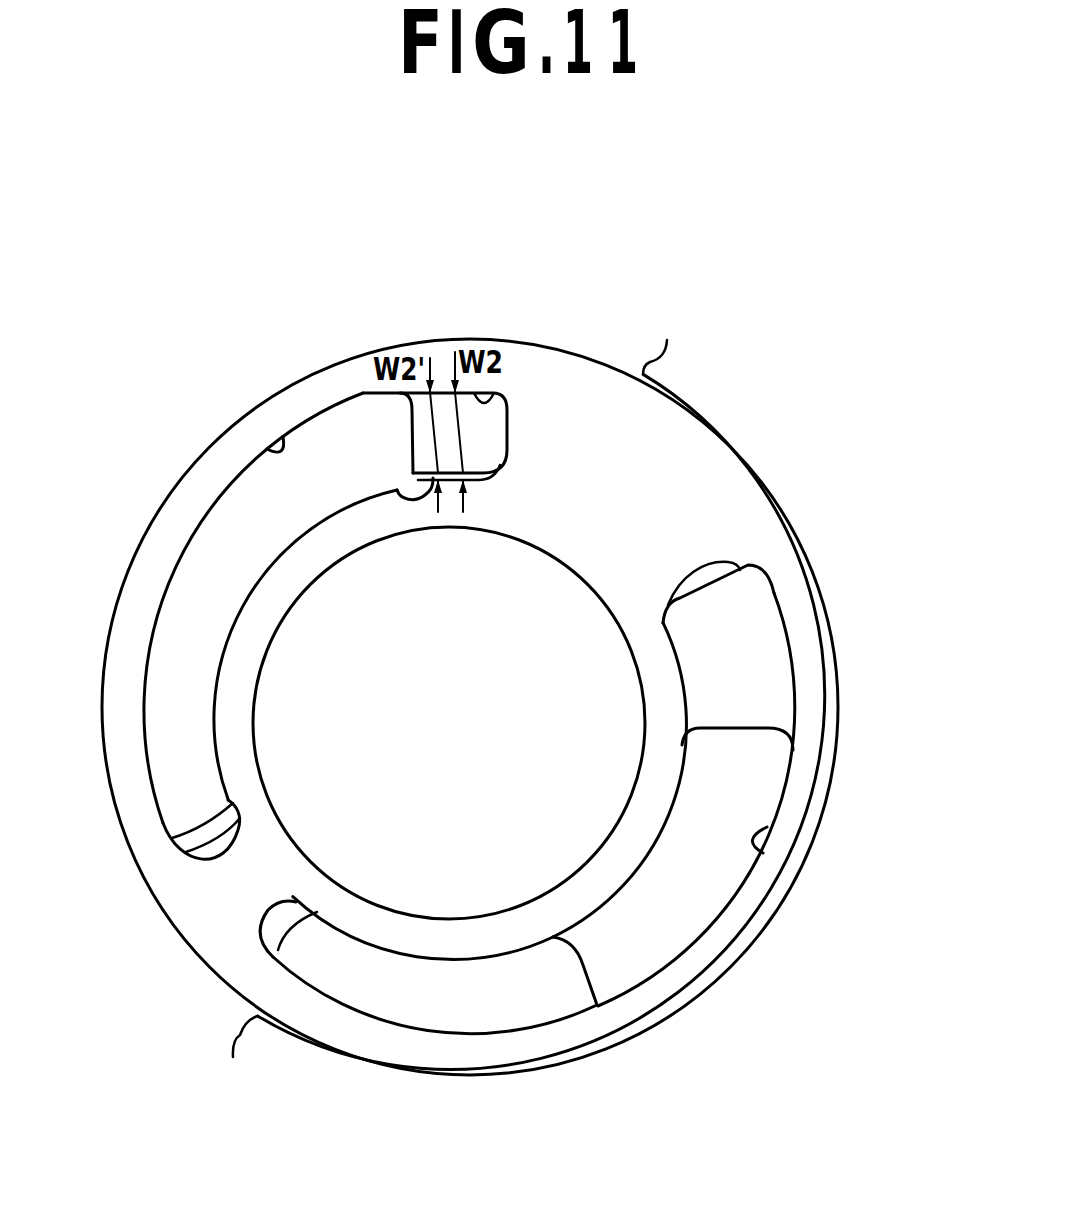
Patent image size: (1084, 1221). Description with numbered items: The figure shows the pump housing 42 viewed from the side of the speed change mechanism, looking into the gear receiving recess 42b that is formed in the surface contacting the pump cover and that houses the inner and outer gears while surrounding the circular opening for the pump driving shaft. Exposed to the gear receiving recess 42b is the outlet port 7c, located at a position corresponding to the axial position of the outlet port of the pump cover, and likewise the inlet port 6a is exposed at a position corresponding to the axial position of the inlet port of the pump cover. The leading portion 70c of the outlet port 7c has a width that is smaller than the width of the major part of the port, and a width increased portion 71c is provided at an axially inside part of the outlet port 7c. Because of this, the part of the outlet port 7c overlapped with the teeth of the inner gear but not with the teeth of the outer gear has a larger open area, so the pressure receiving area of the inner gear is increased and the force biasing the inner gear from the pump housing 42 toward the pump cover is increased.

The pump housing 42 is at (742, 305).
The gear receiving recess 42b is at (707, 477).
The outlet port 7c is at (270, 448).
The width increased portion 71c is at (398, 490).
The leading portion 70c is at (493, 397).
The inlet port 6a is at (760, 848).